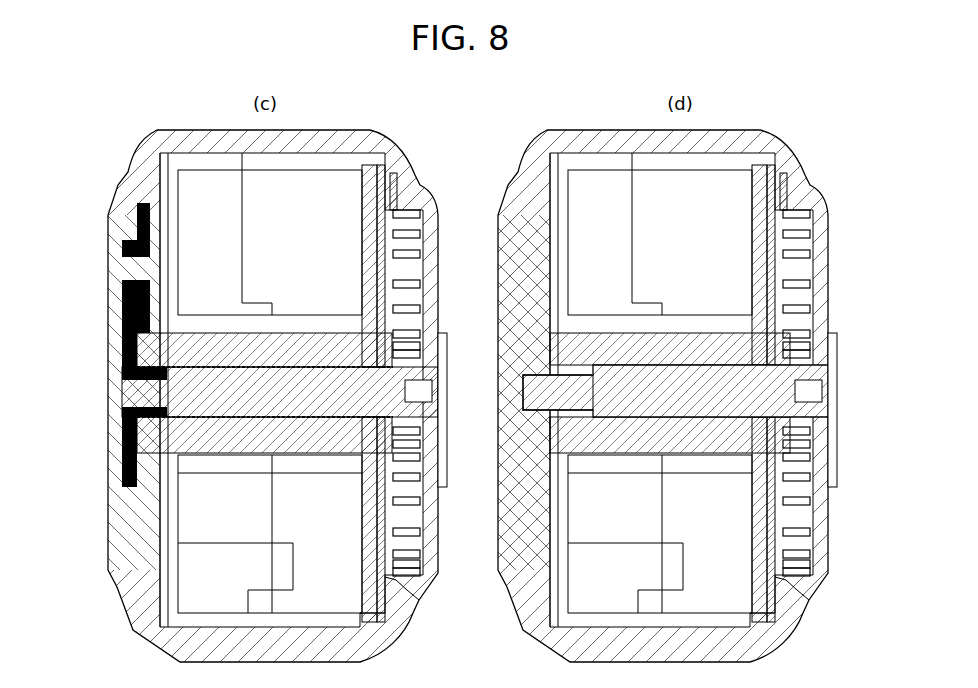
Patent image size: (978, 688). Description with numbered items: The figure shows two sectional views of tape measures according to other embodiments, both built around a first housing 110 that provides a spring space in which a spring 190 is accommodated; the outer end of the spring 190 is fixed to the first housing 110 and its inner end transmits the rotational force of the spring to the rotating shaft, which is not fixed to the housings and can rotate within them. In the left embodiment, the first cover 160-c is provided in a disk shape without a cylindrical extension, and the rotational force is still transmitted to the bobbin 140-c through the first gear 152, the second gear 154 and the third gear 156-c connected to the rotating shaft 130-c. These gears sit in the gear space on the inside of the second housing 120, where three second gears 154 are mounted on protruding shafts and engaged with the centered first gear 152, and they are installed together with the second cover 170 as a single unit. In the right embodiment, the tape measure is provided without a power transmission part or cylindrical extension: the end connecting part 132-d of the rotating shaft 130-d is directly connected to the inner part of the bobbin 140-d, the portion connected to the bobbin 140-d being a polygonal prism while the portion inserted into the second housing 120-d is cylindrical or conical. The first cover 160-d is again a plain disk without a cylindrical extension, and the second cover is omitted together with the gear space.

The first housing 110 is at (418, 188).
The second housing 120 is at (130, 173).
The second housing 120-d is at (533, 130).
The rotating shaft 130-c is at (345, 395).
The rotating shaft 130-d is at (745, 390).
The end connecting part 132-d is at (552, 412).
The bobbin 140-c is at (395, 583).
The bobbin 140-d is at (785, 583).
The first gear 152 is at (125, 333).
The second gear 154 is at (110, 248).
The third gear 156-c is at (122, 372).
The first cover 160-c is at (405, 500).
The first cover 160-d is at (795, 500).
The second cover 170 is at (130, 530).
The spring 190 is at (400, 283).